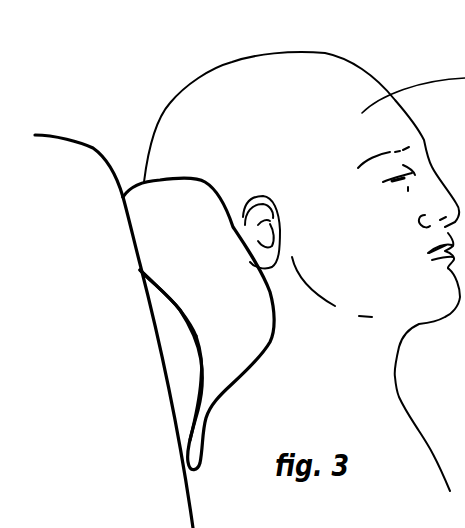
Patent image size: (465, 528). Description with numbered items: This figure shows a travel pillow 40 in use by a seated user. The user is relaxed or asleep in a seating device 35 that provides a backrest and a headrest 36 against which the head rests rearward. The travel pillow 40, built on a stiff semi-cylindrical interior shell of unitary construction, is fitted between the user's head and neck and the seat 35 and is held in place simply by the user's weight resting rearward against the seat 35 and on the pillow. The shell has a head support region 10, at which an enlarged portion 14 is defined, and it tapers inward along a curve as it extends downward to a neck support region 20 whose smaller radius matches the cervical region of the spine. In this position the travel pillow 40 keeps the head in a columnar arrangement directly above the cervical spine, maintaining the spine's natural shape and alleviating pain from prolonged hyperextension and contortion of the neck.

The head support region 10 is at (143, 255).
The enlarged portion 14 is at (185, 307).
The neck support region 20 is at (200, 345).
The seating device 35 is at (147, 469).
The headrest 36 is at (100, 153).
The travel pillow 40 is at (188, 223).